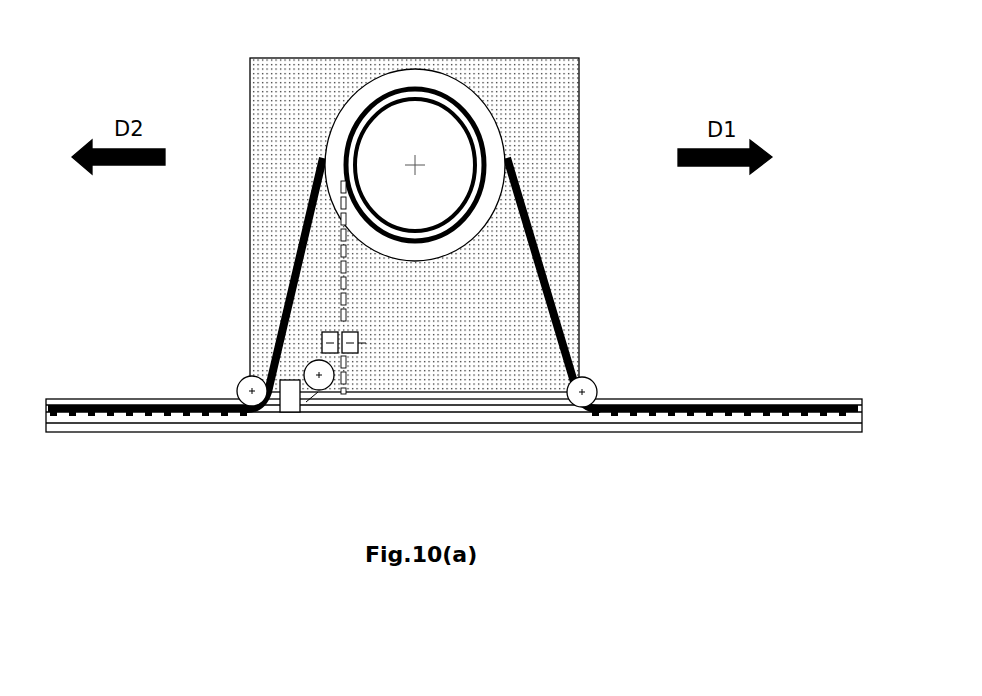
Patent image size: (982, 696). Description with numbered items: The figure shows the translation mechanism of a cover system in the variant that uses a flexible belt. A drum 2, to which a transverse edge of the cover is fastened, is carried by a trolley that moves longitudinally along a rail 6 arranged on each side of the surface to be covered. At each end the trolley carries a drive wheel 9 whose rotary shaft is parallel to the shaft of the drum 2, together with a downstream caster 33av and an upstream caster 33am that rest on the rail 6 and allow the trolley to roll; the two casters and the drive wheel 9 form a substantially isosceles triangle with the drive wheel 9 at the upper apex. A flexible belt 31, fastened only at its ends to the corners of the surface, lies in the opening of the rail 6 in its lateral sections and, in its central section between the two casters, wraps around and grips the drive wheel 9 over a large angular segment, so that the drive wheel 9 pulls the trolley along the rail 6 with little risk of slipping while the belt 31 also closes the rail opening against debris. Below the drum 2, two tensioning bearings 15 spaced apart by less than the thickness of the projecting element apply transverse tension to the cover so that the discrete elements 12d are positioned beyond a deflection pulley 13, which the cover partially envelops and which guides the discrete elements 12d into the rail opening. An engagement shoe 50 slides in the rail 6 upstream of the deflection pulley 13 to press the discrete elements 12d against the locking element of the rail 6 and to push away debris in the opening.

The drive wheel 9 is at (405, 138).
The drum 2 is at (444, 100).
The flexible belt 31 is at (546, 292).
The discrete elements 12d is at (342, 305).
The tensioning bearings 15 is at (330, 333).
The deflection pulley 13 is at (316, 362).
The upstream caster 33am is at (245, 382).
The downstream caster 33av is at (585, 384).
The engagement shoe 50 is at (287, 400).
The rail 6 is at (478, 431).